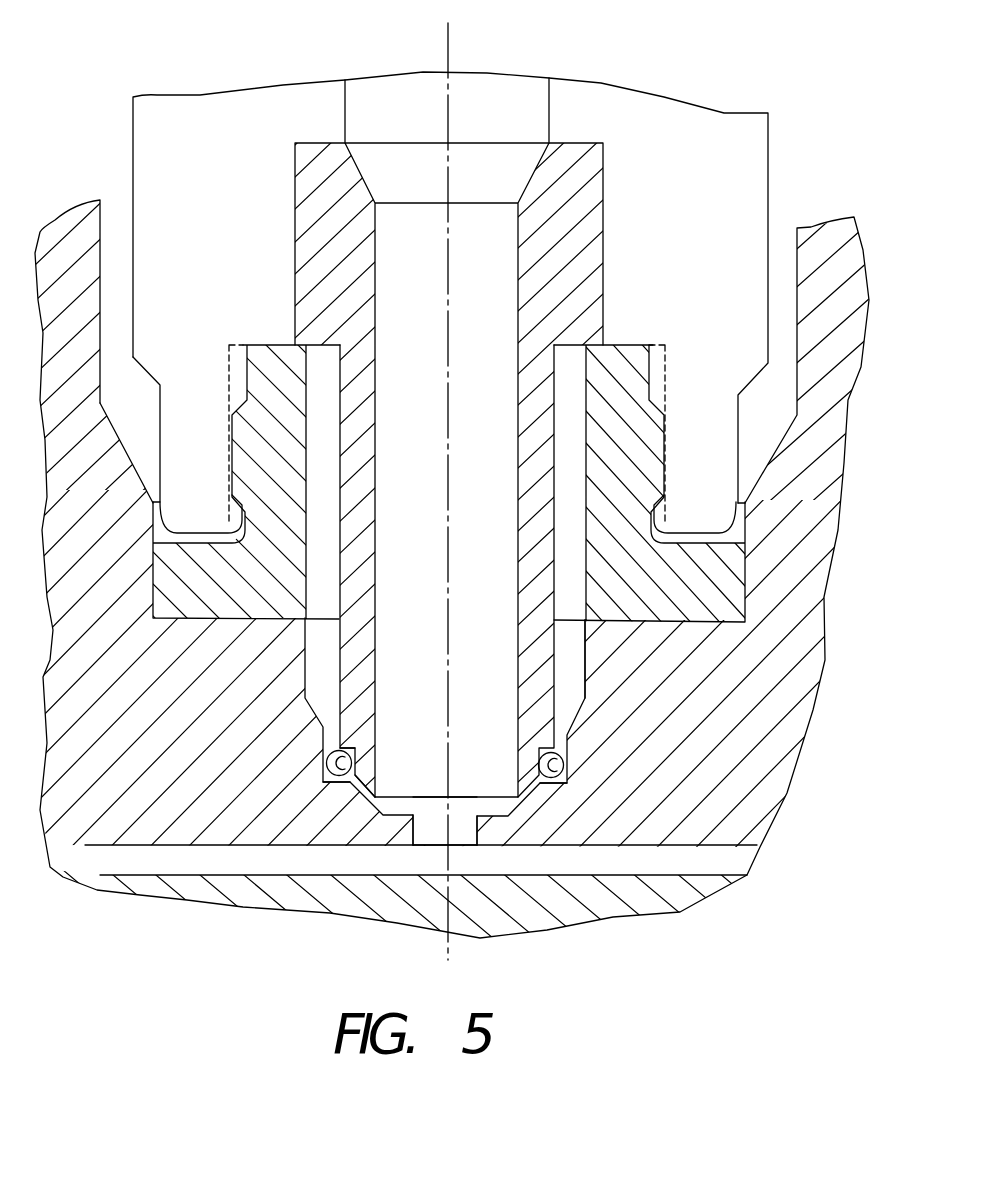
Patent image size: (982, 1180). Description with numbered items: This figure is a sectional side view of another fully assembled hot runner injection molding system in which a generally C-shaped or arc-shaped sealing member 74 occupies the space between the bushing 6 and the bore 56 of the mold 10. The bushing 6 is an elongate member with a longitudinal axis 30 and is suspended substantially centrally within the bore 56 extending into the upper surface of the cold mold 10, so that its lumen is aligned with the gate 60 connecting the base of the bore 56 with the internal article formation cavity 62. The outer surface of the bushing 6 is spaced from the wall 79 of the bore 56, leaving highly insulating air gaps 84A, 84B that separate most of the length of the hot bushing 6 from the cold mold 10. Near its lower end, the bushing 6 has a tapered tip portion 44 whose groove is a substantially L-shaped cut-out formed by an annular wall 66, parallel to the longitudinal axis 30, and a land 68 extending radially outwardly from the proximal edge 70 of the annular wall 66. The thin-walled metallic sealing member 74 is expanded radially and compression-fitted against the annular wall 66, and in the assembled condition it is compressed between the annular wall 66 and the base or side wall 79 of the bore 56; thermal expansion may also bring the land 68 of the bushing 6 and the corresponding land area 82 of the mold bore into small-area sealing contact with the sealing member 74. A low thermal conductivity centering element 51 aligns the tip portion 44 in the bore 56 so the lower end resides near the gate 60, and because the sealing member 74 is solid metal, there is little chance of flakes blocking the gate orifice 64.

The bushing 6 is at (193, 122).
The mold 10 is at (833, 214).
The longitudinal axis 30 is at (447, 47).
The air gap 84A is at (118, 227).
The air gap 84B is at (569, 365).
The tip portion 44 is at (365, 798).
The centering element 51 is at (427, 800).
The bore 56 is at (323, 763).
The gate 60 is at (463, 840).
The article formation cavity 62 is at (165, 860).
The gate orifice 64 is at (443, 817).
The annular wall 66 is at (337, 784).
The land 68 is at (338, 745).
The proximal edge 70 is at (530, 750).
The sealing member 74 is at (567, 783).
The wall of bore 79 is at (587, 647).
The land area 82 is at (338, 780).